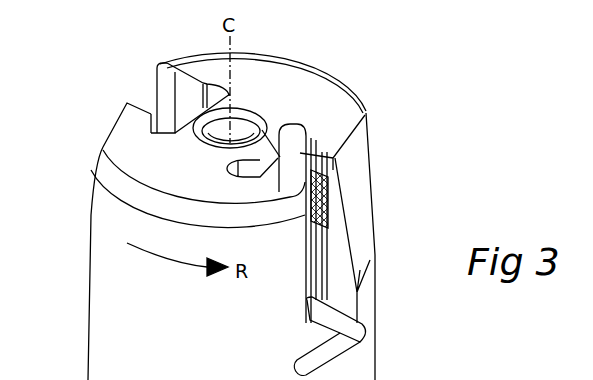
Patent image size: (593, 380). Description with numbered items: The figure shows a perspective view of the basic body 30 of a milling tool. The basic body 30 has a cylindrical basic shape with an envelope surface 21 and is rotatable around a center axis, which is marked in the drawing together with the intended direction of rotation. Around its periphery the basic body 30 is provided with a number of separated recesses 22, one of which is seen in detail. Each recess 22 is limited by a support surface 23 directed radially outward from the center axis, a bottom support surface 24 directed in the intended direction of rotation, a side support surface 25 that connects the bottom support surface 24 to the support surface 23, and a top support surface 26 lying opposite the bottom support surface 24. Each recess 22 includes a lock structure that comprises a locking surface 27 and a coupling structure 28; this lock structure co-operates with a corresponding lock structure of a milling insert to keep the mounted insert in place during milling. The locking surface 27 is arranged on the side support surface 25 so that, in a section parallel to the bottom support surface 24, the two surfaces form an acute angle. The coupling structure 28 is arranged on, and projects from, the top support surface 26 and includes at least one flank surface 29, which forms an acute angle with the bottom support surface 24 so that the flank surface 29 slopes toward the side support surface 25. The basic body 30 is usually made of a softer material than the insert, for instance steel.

The envelope surface 21 is at (101, 275).
The recess 22 is at (136, 90).
The support surface 23 is at (266, 157).
The bottom support surface 24 is at (174, 78).
The side support surface 25 is at (309, 326).
The top support surface 26 is at (337, 250).
The locking surface 27 is at (314, 324).
The coupling structure 28 is at (319, 183).
The flank surface 29 is at (316, 199).
The basic body 30 is at (378, 72).